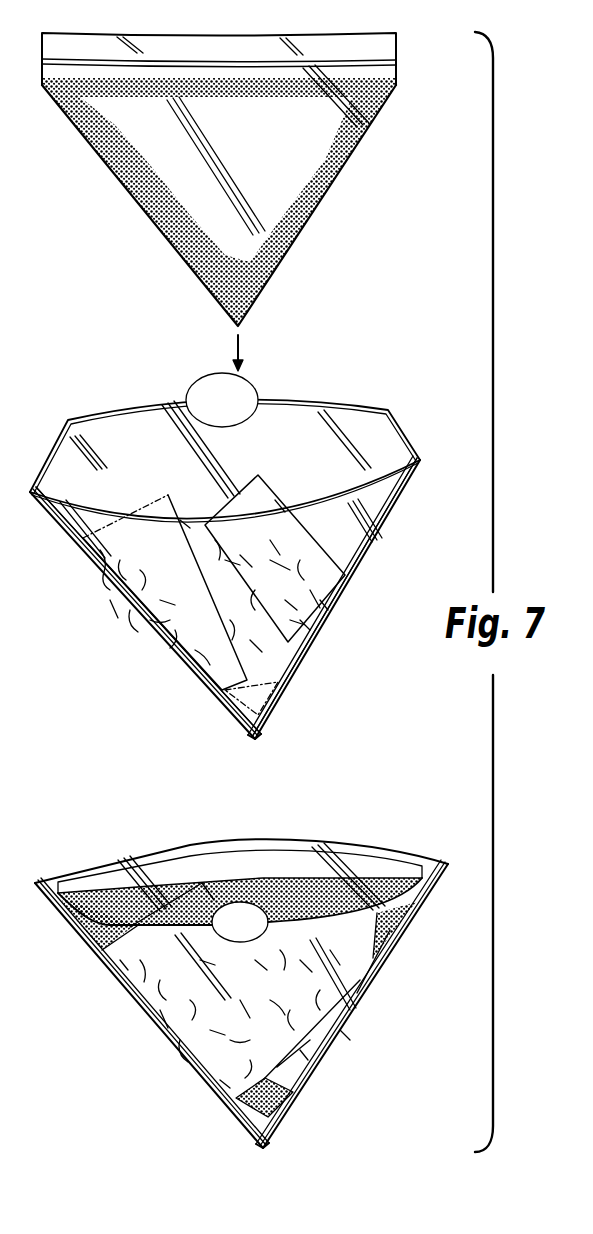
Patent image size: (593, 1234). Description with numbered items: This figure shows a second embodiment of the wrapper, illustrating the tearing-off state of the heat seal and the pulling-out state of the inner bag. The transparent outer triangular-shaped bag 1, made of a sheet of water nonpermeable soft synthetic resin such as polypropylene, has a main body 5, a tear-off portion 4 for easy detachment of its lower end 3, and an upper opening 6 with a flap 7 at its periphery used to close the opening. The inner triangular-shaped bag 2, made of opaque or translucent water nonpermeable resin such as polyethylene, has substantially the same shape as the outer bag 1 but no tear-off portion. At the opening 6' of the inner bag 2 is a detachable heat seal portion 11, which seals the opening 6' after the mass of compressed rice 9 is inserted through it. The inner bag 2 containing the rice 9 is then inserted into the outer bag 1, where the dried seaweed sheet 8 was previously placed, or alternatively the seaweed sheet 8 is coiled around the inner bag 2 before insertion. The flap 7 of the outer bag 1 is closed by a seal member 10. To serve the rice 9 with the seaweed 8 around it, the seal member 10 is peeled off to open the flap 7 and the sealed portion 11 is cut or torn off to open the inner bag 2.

The outer triangular-shaped bag 1 is at (352, 546).
The inner triangular-shaped bag 2 is at (315, 150).
The lower end 3 is at (259, 730).
The tear-off portion 4 is at (233, 713).
The main body 5 is at (370, 507).
The upper opening 6 is at (226, 642).
The opening 6' is at (219, 42).
The flap 7 is at (96, 420).
The dried seaweed sheet 8 is at (190, 615).
The mass of rice 9 is at (275, 235).
The seal member 10 is at (250, 386).
The heat seal portion 11 is at (380, 52).